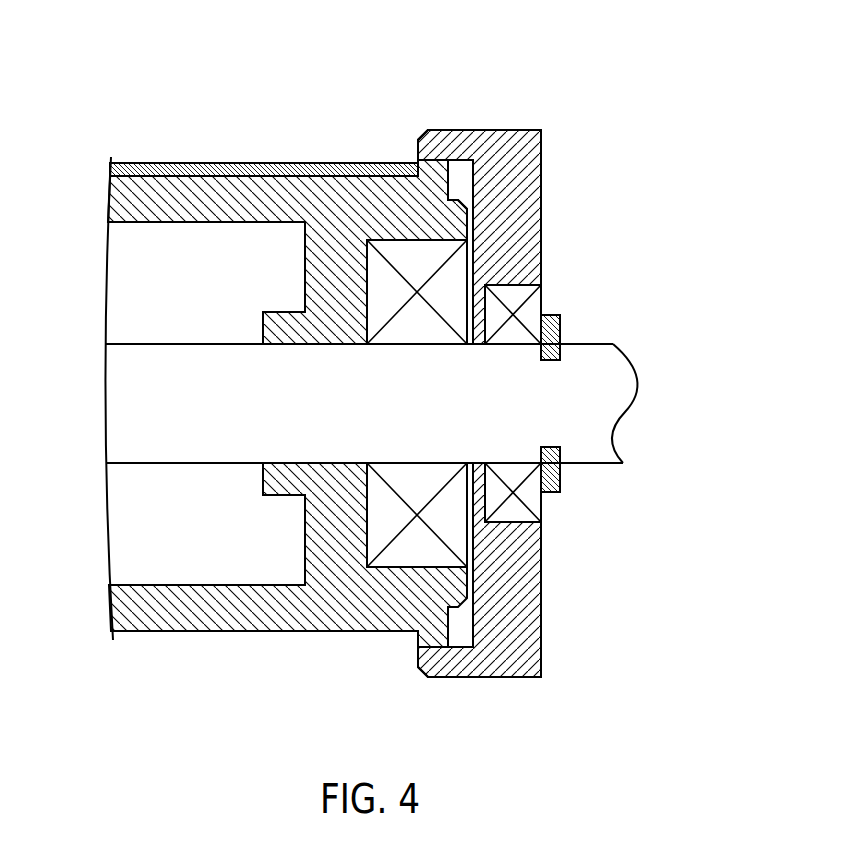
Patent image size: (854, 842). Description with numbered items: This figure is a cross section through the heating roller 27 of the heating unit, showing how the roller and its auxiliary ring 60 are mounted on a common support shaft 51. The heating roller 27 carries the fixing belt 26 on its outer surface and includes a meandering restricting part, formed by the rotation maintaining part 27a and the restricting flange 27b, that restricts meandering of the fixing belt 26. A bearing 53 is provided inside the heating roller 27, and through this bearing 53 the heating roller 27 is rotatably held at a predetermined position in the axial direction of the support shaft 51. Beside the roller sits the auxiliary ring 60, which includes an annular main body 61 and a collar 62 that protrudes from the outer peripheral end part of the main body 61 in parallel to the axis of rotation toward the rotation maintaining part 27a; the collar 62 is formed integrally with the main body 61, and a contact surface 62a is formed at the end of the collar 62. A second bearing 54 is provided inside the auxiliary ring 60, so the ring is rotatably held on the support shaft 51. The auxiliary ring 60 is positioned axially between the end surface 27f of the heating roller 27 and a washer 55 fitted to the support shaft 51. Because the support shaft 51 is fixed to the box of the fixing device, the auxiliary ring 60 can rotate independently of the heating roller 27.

The auxiliary ring 60 is at (503, 341).
The main body 61 is at (541, 158).
The collar 62 is at (487, 130).
The contact surface 62a is at (417, 141).
The fixing belt 26 is at (155, 163).
The heating roller 27 is at (292, 176).
The rotation maintaining part 27a is at (344, 176).
The restricting flange 27b is at (413, 172).
The end surface 27f is at (468, 217).
The bearing 53 is at (460, 264).
The bearing 54 is at (533, 297).
The washer 55 is at (561, 330).
The support shaft 51 is at (127, 400).